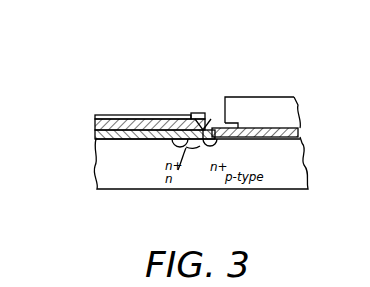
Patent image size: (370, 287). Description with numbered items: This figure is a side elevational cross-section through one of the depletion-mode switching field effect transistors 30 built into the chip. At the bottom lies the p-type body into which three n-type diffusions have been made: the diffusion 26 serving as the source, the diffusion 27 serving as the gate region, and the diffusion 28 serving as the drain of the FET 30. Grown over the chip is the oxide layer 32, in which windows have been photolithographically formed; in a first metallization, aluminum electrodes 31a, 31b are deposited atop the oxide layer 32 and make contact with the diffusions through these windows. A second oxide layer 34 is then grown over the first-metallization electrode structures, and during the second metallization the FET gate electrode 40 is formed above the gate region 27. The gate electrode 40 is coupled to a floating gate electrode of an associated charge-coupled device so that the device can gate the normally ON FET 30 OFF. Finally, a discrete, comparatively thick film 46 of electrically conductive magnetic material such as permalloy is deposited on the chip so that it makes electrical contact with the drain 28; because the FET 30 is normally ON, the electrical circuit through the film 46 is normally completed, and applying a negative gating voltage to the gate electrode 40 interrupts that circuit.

The depletion-mode switching field effect transistor 30 is at (217, 88).
The n-type diffusion 26 is at (174, 144).
The n-type diffusion 27 is at (207, 146).
The n-type diffusion 28 is at (226, 145).
The aluminum electrode 31a is at (172, 120).
The aluminum electrode 31b is at (241, 100).
The oxide layer 32 is at (95, 163).
The second oxide layer 34 is at (95, 118).
The FET gate electrode 40 is at (198, 112).
The film of electrically conductive magnetic material 46 is at (283, 97).